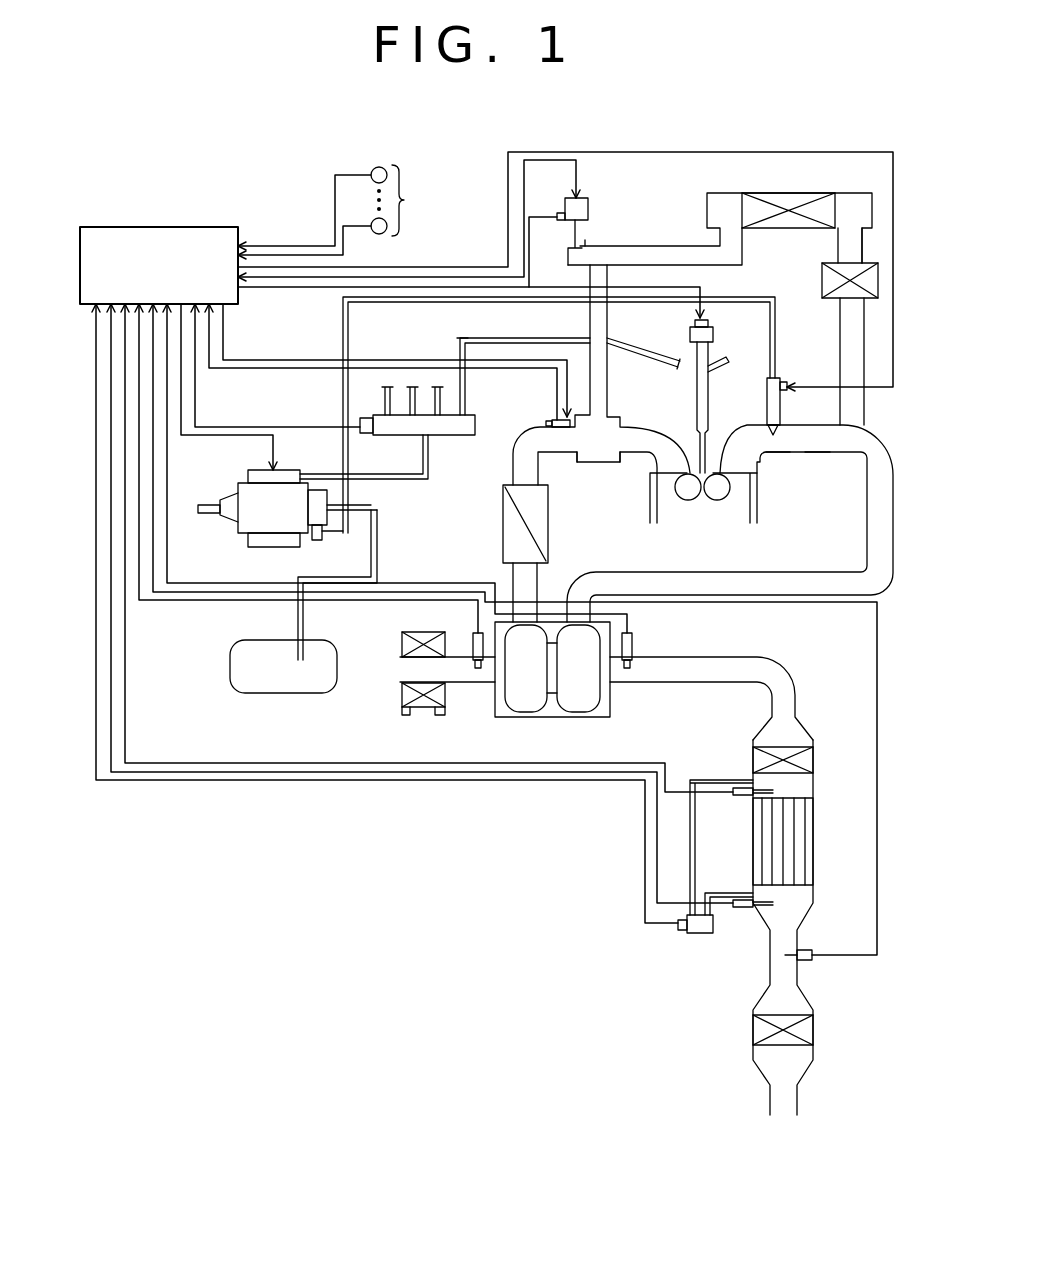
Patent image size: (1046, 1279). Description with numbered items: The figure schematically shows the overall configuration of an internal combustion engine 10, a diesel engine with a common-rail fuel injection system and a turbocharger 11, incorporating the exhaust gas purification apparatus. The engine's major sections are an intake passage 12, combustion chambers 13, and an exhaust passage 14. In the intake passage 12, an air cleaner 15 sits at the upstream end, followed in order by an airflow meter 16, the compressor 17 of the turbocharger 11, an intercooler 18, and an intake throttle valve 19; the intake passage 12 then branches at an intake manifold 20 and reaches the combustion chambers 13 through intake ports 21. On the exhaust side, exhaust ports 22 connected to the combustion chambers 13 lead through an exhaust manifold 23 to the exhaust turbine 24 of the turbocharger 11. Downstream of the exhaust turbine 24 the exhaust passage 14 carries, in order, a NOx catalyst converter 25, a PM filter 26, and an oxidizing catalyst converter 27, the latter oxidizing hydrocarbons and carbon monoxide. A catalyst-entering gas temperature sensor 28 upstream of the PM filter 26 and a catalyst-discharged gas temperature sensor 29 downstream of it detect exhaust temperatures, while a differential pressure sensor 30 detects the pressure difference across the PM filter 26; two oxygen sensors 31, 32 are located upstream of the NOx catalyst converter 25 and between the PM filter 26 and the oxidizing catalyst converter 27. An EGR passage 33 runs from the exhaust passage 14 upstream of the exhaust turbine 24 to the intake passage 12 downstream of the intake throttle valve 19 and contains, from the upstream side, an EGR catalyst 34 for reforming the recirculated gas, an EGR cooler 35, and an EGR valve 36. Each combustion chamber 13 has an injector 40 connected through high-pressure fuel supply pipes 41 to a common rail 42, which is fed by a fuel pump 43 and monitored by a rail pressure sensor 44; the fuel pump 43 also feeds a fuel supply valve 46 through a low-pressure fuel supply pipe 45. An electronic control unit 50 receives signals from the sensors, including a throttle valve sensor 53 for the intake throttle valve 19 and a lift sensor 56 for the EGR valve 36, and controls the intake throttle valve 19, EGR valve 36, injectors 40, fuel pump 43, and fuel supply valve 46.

The internal combustion engine 10 is at (640, 521).
The turbocharger 11 is at (495, 708).
The intake passage 12 is at (543, 480).
The combustion chambers 13 is at (696, 501).
The exhaust passage 14 is at (867, 527).
The air cleaner 15 is at (402, 693).
The airflow meter 16 is at (473, 647).
The compressor 17 is at (530, 708).
The intercooler 18 is at (503, 545).
The intake throttle valve 19 is at (562, 452).
The intake manifold 20 is at (645, 428).
The intake ports 21 is at (643, 463).
The exhaust ports 22 is at (762, 456).
The exhaust manifold 23 is at (818, 453).
The exhaust turbine 24 is at (580, 708).
The NOx catalyst converter 25 is at (813, 760).
The PM filter 26 is at (813, 824).
The oxidizing catalyst converter 27 is at (813, 1034).
The catalyst-entering gas temperature sensor 28 is at (743, 796).
The catalyst-discharged gas temperature sensor 29 is at (742, 908).
The differential pressure sensor 30 is at (700, 934).
The oxygen sensor 31 is at (633, 646).
The oxygen sensor 32 is at (812, 960).
The EGR passage 33 is at (660, 246).
The EGR valve 34 is at (822, 286).
The EGR cooler 35 is at (762, 228).
The EGR valve 36 is at (588, 200).
The injector 40 is at (690, 337).
The high-pressure fuel supply pipes 41 is at (488, 338).
The common rail 42 is at (450, 435).
The fuel pump 43 is at (246, 528).
The rail pressure sensor 44 is at (368, 435).
The low-pressure fuel supply pipe 45 is at (408, 303).
The fuel supply valve 46 is at (766, 390).
The electronic control unit 50 is at (220, 227).
The throttle valve sensor 53 is at (546, 422).
The lift sensor 56 is at (560, 214).